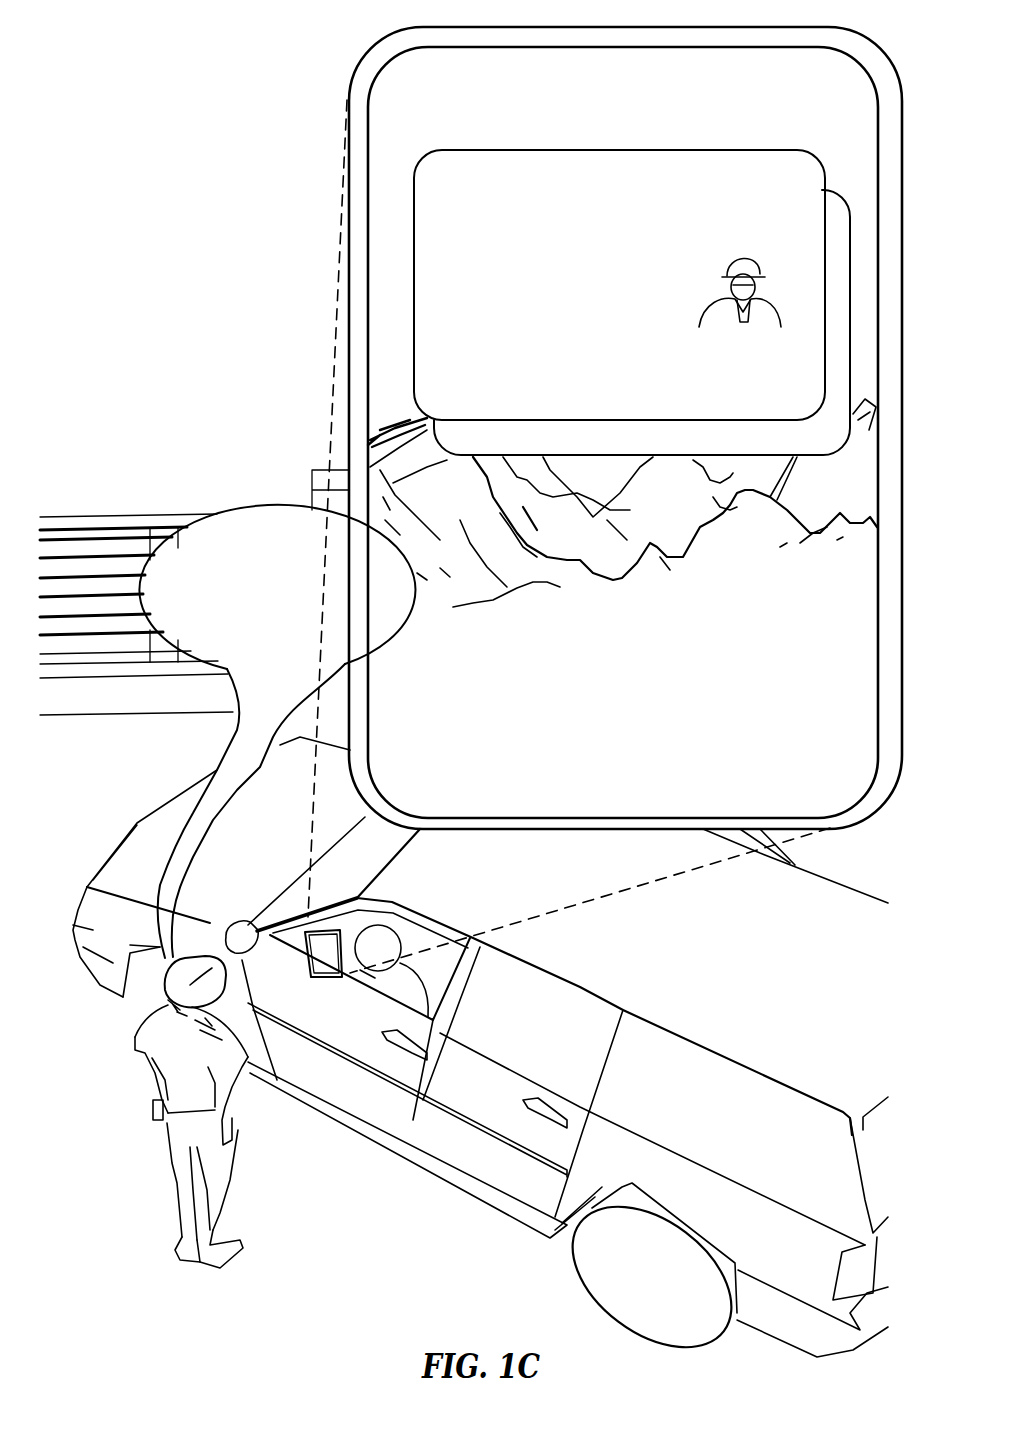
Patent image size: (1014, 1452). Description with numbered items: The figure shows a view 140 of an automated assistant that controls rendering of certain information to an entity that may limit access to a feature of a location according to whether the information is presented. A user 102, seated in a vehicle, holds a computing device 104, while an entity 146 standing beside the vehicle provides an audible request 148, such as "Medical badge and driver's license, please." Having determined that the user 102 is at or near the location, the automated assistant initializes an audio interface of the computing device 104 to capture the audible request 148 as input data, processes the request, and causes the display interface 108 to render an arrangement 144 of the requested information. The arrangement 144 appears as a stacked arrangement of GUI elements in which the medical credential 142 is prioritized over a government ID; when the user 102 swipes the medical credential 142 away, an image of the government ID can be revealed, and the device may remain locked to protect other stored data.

The view 140 is at (133, 67).
The display interface 108 is at (825, 85).
The arrangement 144 is at (548, 124).
The medical credential 142 is at (633, 218).
The audible request 148 is at (265, 503).
The entity 146 is at (207, 1112).
The user 102 is at (392, 926).
The computing device 104 is at (323, 922).